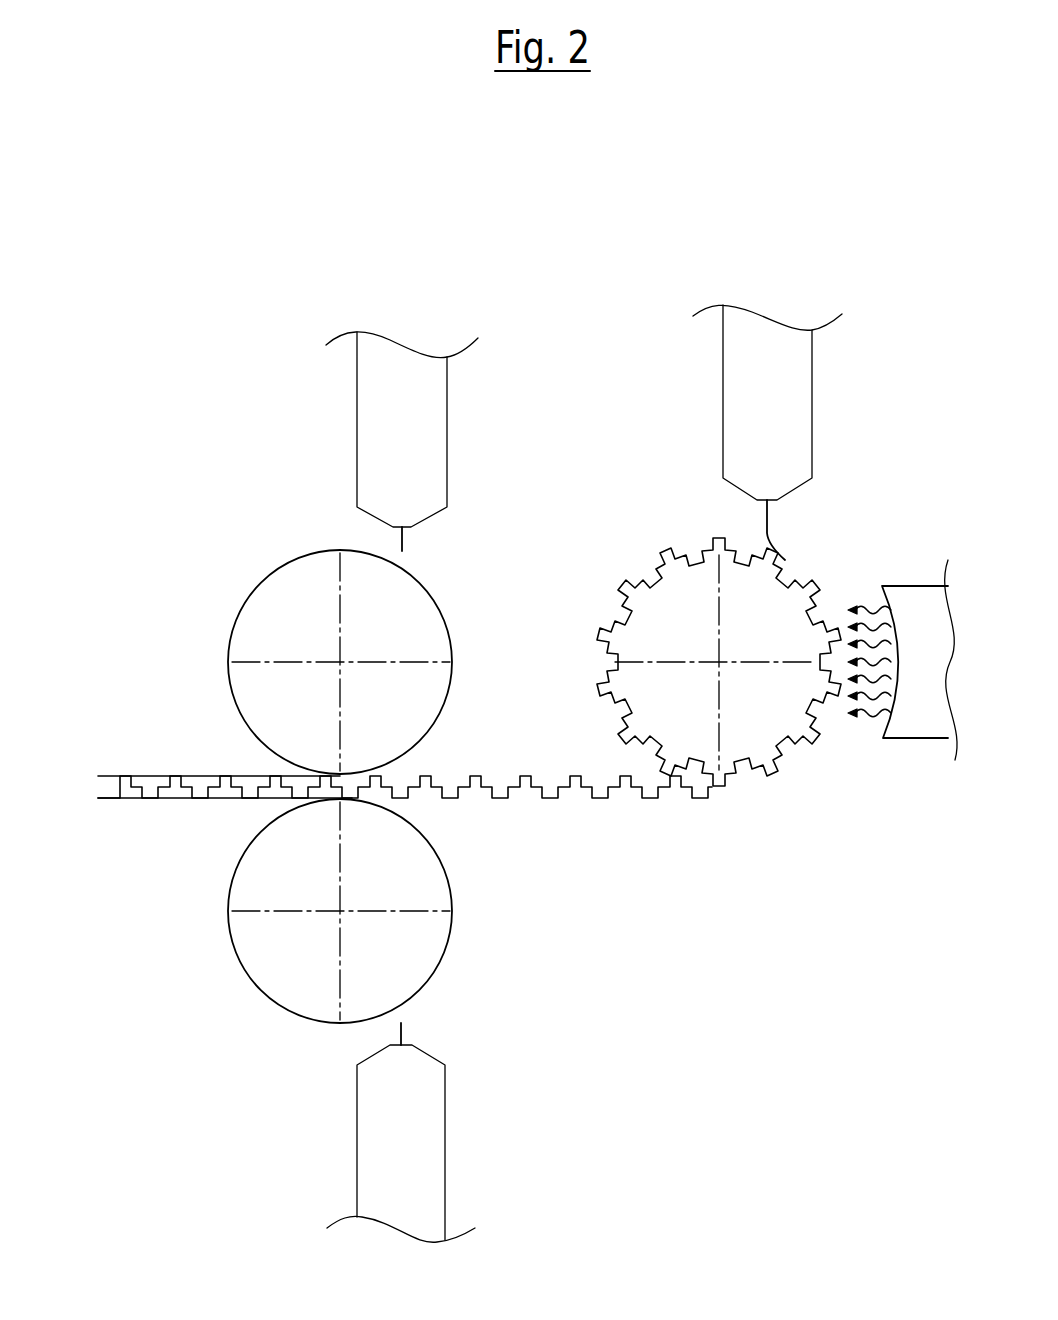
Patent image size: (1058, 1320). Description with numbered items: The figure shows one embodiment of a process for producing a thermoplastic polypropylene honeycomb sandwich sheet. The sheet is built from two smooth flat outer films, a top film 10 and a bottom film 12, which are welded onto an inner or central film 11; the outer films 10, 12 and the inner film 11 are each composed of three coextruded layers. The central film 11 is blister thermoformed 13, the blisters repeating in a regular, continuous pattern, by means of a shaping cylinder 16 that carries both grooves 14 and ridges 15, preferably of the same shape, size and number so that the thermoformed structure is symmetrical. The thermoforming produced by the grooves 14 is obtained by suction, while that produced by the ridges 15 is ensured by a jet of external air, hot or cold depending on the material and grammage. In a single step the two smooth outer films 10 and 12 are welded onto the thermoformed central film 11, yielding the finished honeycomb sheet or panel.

The flat outer film (top) 10 is at (152, 775).
The inner or central film 11 is at (100, 787).
The flat outer film (bottom) 12 is at (133, 798).
The blister thermoformed structure 13 is at (245, 782).
The grooves 14 is at (667, 565).
The ridges 15 is at (607, 610).
The shaping cylinder 16 is at (766, 709).